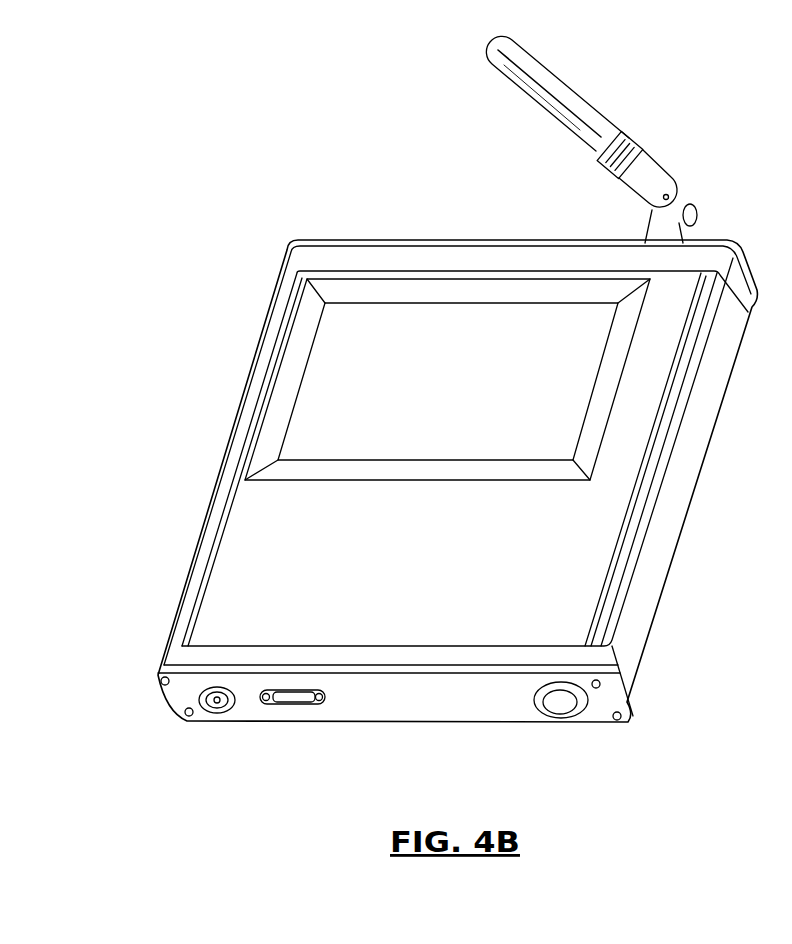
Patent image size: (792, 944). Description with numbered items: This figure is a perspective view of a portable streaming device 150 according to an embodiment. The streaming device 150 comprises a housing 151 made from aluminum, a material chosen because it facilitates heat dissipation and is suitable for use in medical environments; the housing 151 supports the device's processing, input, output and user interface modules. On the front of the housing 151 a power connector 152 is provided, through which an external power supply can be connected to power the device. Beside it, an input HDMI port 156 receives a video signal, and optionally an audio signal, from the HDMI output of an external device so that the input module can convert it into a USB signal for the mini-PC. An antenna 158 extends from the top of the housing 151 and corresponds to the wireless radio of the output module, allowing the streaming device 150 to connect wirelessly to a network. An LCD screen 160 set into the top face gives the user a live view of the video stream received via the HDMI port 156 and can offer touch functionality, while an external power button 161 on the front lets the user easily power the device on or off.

The portable streaming device 150 is at (340, 190).
The housing 151 is at (592, 535).
The power connector 152 is at (213, 708).
The input HDMI port 156 is at (293, 702).
The antenna 158 is at (585, 115).
The LCD screen 160 is at (400, 362).
The external power button 161 is at (560, 705).